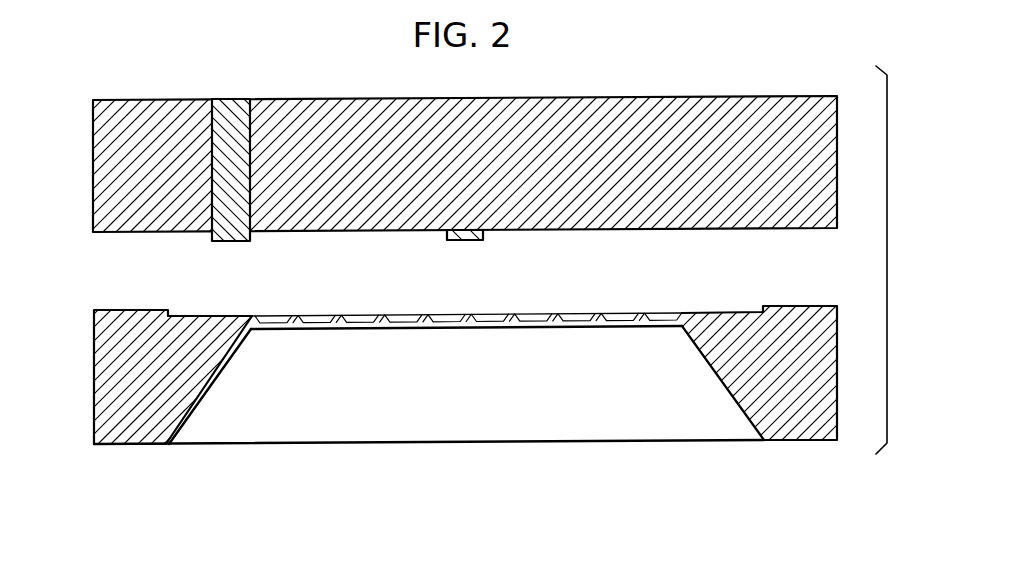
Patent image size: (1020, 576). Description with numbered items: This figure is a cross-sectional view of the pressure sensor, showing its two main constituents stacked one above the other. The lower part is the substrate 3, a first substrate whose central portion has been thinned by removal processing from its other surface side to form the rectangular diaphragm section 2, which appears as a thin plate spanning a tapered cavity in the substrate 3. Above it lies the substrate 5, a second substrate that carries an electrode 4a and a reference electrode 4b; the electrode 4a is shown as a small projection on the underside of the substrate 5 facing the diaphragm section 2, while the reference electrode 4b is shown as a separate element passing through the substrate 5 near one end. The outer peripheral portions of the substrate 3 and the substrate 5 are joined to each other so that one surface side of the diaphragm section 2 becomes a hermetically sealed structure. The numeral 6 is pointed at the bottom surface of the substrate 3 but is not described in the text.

The diaphragm section 2 is at (524, 304).
The substrate 3 is at (833, 377).
The electrode 4a is at (463, 238).
The reference electrode 4b is at (230, 238).
The substrate 5 is at (837, 170).
The bottom surface 6 is at (527, 439).